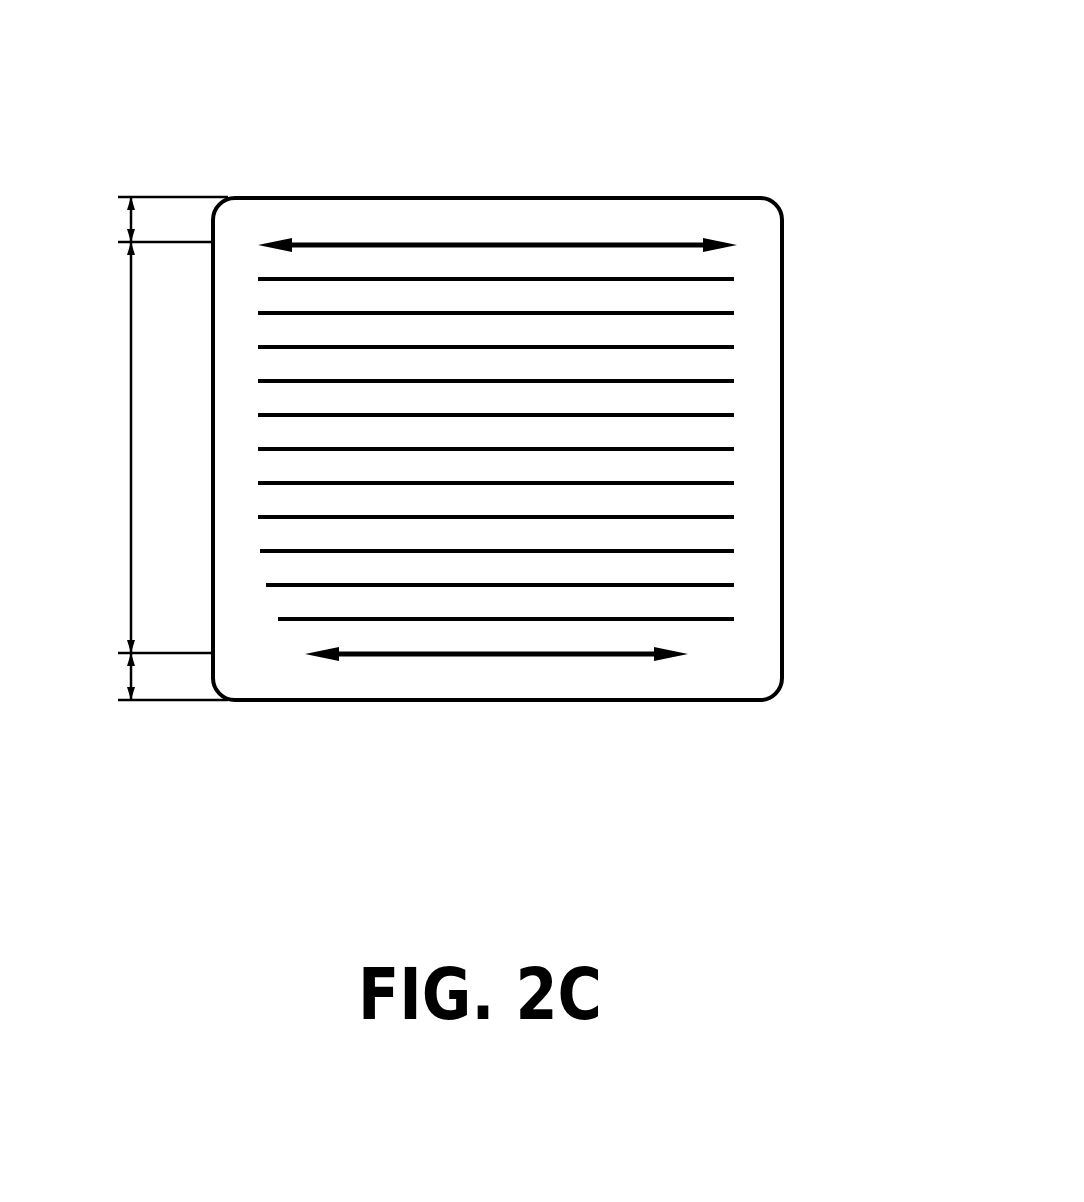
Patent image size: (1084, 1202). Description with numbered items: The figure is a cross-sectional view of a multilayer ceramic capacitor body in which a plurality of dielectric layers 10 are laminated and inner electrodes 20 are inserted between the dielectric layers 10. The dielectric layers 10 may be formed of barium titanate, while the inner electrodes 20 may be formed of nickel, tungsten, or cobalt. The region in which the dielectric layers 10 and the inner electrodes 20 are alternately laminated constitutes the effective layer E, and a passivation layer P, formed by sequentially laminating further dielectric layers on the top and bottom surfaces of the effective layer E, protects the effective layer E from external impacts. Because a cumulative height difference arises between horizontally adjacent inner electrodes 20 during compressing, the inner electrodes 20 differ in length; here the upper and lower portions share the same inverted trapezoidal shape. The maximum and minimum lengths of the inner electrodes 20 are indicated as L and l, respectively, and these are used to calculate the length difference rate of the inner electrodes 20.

The dielectric layers 10 is at (635, 267).
The inner electrodes 20 is at (708, 345).
The maximum length of inner electrodes L is at (460, 245).
The minimum length of inner electrodes l is at (485, 653).
The passivation layer P is at (157, 448).
The effective layer E is at (106, 447).